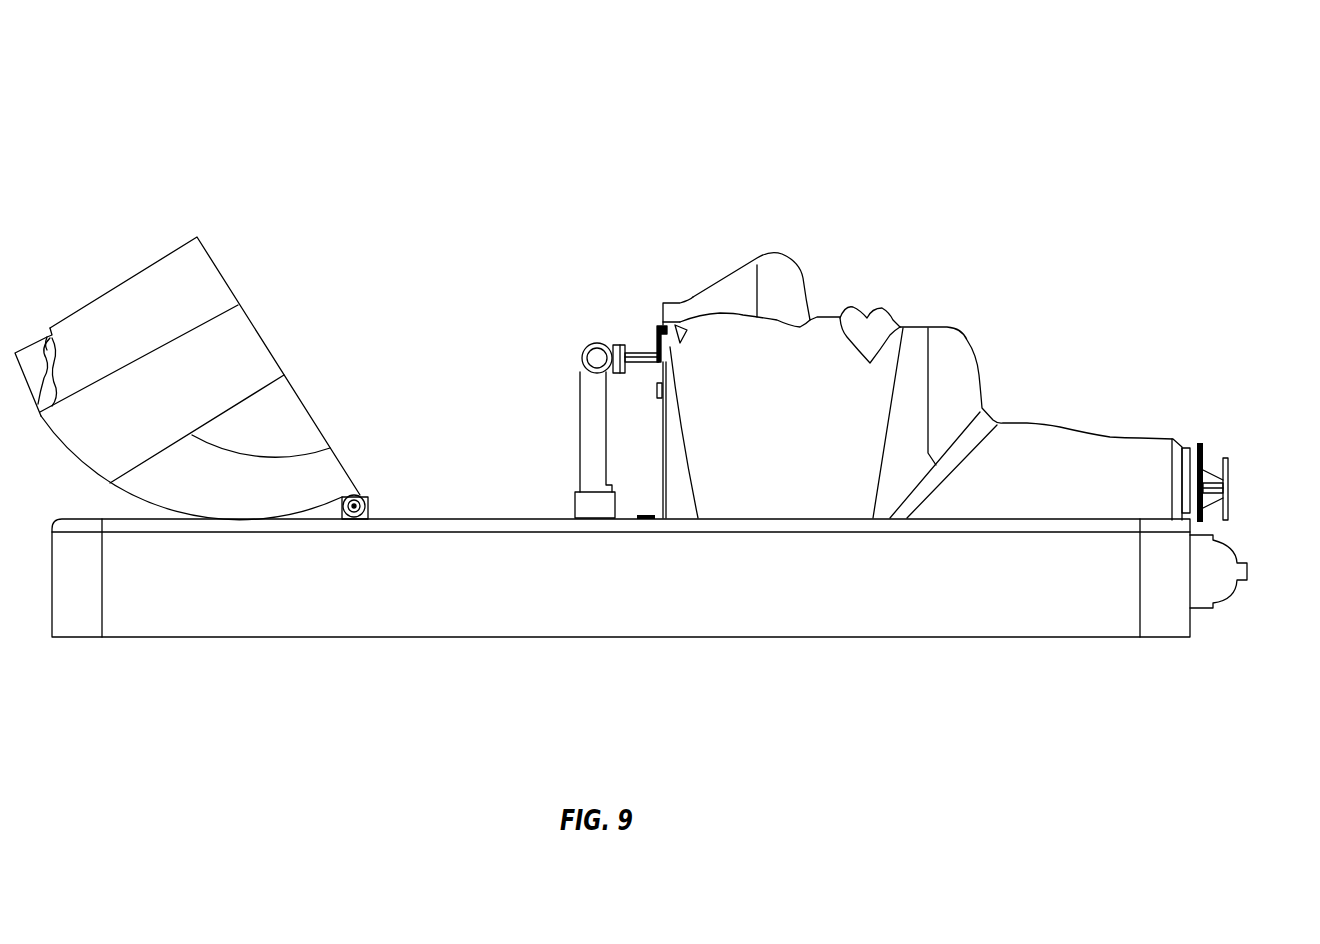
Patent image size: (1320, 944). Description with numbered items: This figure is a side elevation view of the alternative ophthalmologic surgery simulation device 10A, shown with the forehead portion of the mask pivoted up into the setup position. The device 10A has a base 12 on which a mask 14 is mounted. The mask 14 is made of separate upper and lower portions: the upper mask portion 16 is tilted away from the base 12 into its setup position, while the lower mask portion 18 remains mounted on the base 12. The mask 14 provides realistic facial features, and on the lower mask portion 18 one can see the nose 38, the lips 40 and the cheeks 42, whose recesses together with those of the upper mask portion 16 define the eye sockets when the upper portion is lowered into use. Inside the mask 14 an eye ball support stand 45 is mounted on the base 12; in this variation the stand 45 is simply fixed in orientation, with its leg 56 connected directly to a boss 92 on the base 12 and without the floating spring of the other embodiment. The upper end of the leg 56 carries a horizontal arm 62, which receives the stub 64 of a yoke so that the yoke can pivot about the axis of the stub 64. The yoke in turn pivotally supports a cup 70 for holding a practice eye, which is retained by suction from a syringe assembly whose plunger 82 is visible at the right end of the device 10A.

The device 10A is at (308, 114).
The base 12 is at (478, 618).
The mask 14 is at (83, 445).
The upper mask portion 16 is at (143, 268).
The lower mask portion 18 is at (970, 343).
The nose 38 is at (777, 253).
The lips 40 is at (862, 303).
The cheeks 42 is at (717, 333).
The eye ball support stand 45 is at (572, 354).
The leg 56 is at (580, 423).
The horizontal arm 62 is at (598, 342).
The stub 64 is at (643, 350).
The cup 70 is at (653, 377).
The plunger 82 is at (1228, 470).
The boss 92 is at (575, 500).